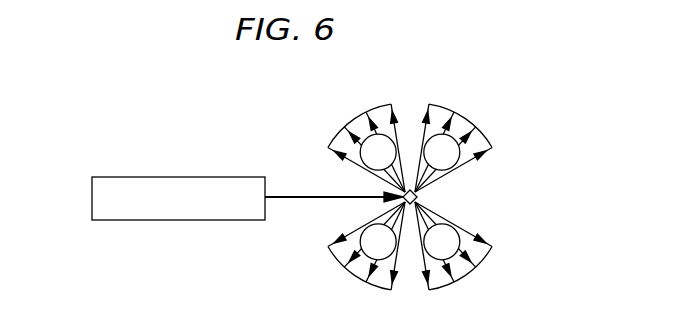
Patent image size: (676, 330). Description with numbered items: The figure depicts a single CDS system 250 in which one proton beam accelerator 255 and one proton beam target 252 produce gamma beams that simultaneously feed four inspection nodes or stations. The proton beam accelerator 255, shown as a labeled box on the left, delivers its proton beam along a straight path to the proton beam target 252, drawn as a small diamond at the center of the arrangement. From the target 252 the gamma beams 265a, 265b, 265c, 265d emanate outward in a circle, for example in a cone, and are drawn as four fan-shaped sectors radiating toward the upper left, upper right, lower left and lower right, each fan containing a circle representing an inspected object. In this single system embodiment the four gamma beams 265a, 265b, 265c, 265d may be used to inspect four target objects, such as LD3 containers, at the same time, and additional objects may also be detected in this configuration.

The CDS system 250 is at (232, 126).
The proton beam target 252 is at (422, 200).
The proton beam accelerator 255 is at (92, 197).
The gamma beam 265a is at (352, 108).
The gamma beam 265b is at (476, 108).
The gamma beam 265c is at (350, 286).
The gamma beam 265d is at (470, 288).